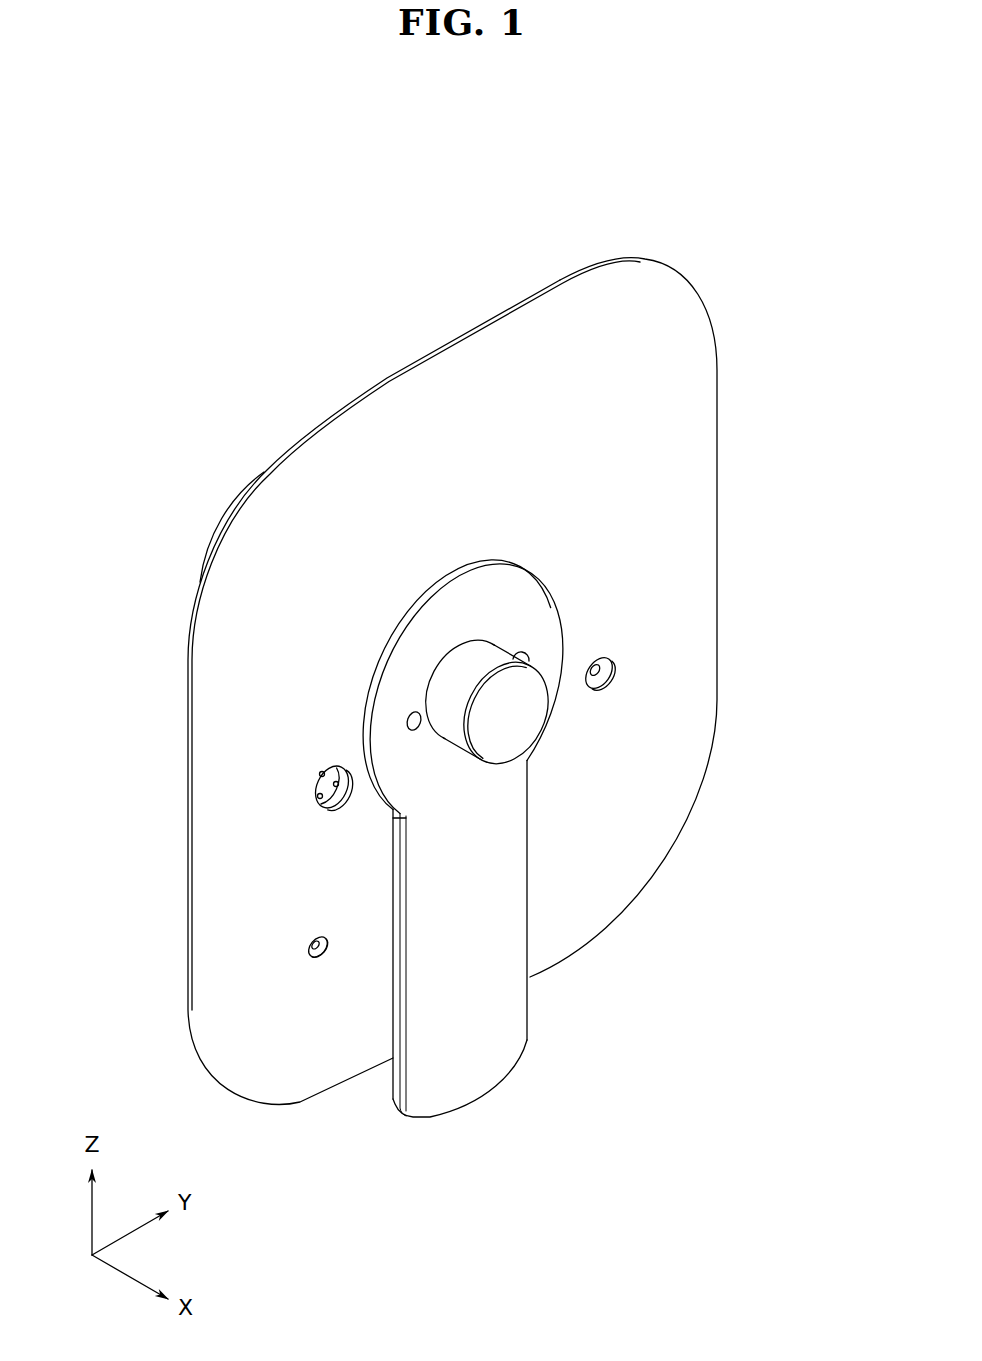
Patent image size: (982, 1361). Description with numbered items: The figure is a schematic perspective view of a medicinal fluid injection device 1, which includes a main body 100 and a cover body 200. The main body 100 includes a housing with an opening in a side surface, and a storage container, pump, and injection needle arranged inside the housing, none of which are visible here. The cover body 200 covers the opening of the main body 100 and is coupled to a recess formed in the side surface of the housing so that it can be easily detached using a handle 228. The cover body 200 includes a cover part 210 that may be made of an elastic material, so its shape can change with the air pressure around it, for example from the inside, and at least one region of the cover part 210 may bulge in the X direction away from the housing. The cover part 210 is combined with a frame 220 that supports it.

The medicinal fluid injection device 1 is at (731, 264).
The main body 100 is at (220, 507).
The cover body 200 is at (566, 560).
The cover part 210 is at (510, 720).
The frame 220 is at (501, 1017).
The handle 228 is at (394, 1104).